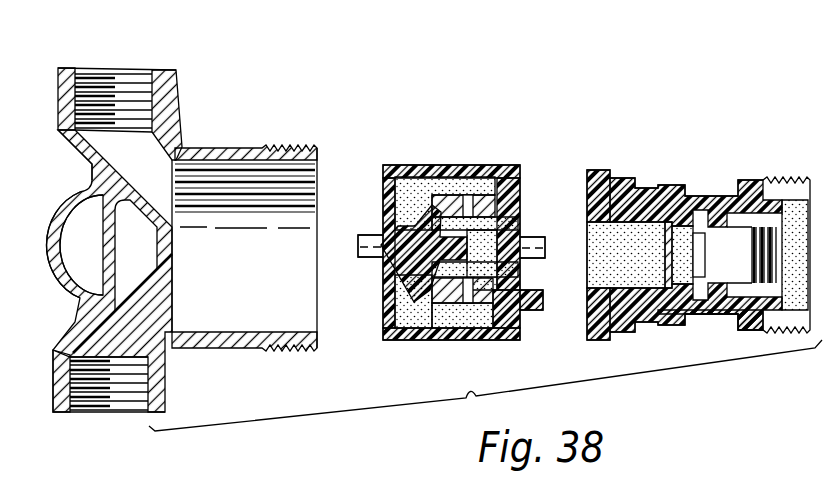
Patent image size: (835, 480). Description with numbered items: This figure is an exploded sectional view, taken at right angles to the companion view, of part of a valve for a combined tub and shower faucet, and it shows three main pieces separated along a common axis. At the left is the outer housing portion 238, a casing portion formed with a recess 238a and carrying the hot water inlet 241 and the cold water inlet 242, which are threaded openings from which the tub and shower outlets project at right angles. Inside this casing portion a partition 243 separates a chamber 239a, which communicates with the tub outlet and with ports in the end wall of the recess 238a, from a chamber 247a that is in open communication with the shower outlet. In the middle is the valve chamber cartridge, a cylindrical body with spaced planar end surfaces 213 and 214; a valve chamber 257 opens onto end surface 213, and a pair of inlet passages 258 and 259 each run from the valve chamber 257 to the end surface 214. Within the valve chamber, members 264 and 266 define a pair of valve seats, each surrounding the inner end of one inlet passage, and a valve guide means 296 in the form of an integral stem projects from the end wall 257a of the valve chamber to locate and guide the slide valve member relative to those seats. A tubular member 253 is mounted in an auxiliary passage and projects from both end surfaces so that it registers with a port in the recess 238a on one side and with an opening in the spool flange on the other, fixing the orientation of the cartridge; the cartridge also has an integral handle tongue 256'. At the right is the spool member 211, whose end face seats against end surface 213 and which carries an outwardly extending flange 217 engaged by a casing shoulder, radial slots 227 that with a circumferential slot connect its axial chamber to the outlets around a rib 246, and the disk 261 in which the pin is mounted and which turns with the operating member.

The outer housing portion 238 is at (247, 152).
The hot water inlet 241 is at (133, 77).
The cold water inlet 242 is at (118, 400).
The partition 243 is at (104, 218).
The chamber 247a is at (84, 278).
The chamber 239a is at (137, 255).
The recess 238a is at (186, 313).
The end surface 214 is at (388, 172).
The disk 261 is at (448, 338).
The end surface 213 is at (519, 172).
The inlet passage 259 is at (414, 179).
The valve seat defining means 266 is at (472, 205).
The valve chamber 257 is at (513, 238).
The end wall 257a is at (418, 270).
The tubular member 253 is at (359, 237).
The valve guide means 296 is at (470, 258).
The inlet passage 258 is at (427, 313).
The valve seat defining means 264 is at (482, 330).
The handle tongue 256' is at (551, 331).
The spool member 211 is at (637, 178).
The flange 217 is at (594, 168).
The radial slots 227 is at (701, 228).
The rib 246 is at (676, 318).